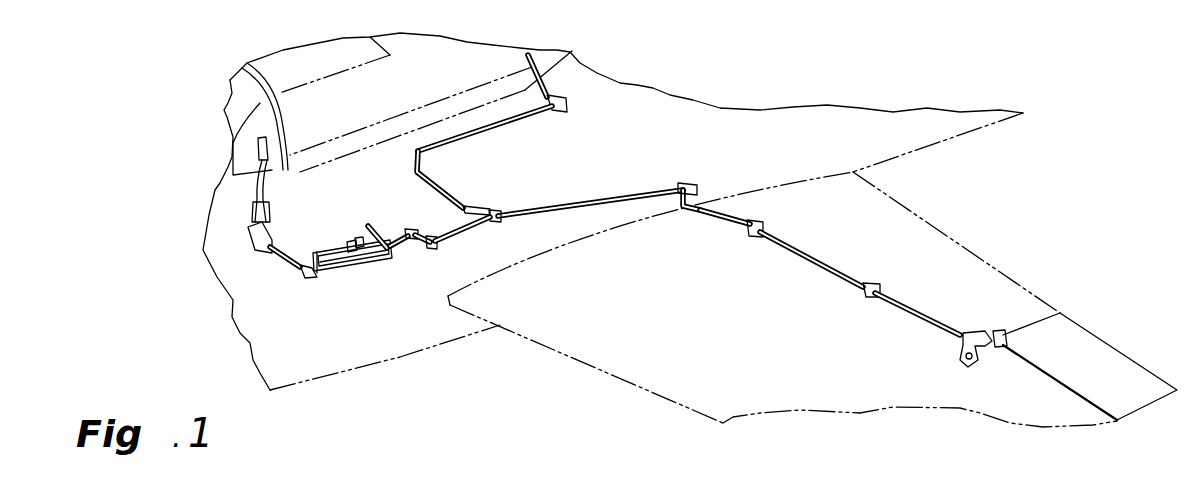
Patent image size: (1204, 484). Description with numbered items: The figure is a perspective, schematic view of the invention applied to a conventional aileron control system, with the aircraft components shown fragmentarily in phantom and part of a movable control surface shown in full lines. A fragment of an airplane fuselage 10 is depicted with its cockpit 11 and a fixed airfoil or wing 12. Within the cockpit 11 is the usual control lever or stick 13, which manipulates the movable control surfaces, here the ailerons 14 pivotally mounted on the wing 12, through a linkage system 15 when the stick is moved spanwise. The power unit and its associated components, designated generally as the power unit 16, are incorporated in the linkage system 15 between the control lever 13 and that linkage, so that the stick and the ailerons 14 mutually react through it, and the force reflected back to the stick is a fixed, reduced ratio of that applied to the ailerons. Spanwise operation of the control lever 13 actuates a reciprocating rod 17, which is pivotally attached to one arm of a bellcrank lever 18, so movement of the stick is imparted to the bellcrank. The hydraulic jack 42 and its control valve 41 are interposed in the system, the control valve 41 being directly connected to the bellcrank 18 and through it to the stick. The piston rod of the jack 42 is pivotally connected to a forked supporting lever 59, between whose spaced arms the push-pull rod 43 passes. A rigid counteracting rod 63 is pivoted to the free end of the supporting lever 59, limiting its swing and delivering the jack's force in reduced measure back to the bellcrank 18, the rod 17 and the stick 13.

The airplane fuselage 10 is at (345, 362).
The cockpit 11 is at (413, 92).
The fixed airfoil or wing 12 is at (730, 360).
The control lever or stick 13 is at (265, 178).
The ailerons 14 is at (1093, 347).
The linkage system 15 is at (562, 195).
The power unit 16 is at (352, 261).
The reciprocating rod 17 is at (283, 268).
The bellcrank lever 18 is at (320, 273).
The control valve 41 is at (349, 243).
The hydraulic jack 42 is at (362, 237).
The push-pull rod 43 is at (402, 233).
The supporting lever 59 is at (377, 240).
The counteracting rod 63 is at (373, 260).